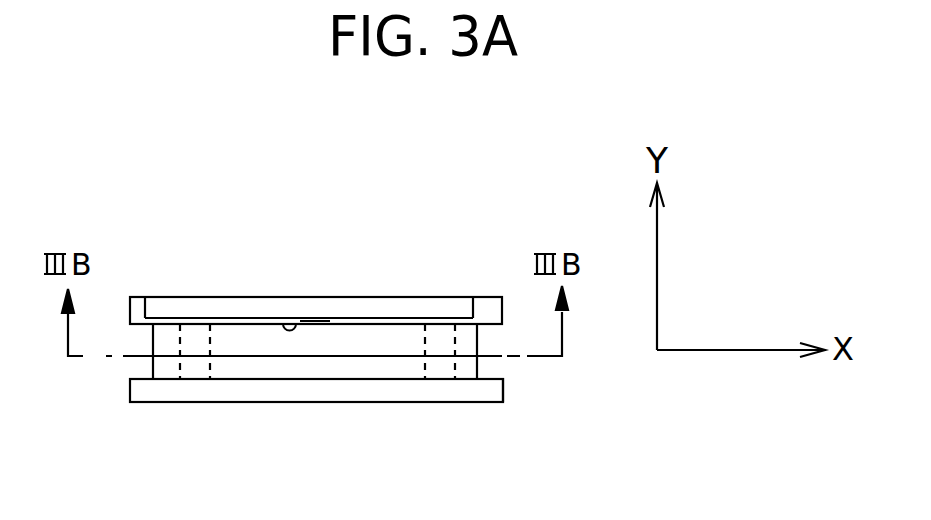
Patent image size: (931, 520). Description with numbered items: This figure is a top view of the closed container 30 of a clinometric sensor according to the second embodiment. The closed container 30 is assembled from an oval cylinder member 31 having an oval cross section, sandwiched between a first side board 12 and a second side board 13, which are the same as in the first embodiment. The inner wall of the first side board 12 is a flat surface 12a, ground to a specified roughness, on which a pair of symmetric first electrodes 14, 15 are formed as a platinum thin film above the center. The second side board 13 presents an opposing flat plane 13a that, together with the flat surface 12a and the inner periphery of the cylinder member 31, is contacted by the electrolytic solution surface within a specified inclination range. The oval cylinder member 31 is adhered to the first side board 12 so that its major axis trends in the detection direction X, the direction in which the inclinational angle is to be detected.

The first side board 12 is at (365, 303).
The flat surface 12a is at (284, 318).
The second side board 13 is at (357, 390).
The flat plane 13a is at (492, 380).
The first electrode 14 is at (143, 297).
The first electrode 15 is at (465, 322).
The closed container 30 is at (192, 292).
The oval cylinder member 31 is at (153, 369).